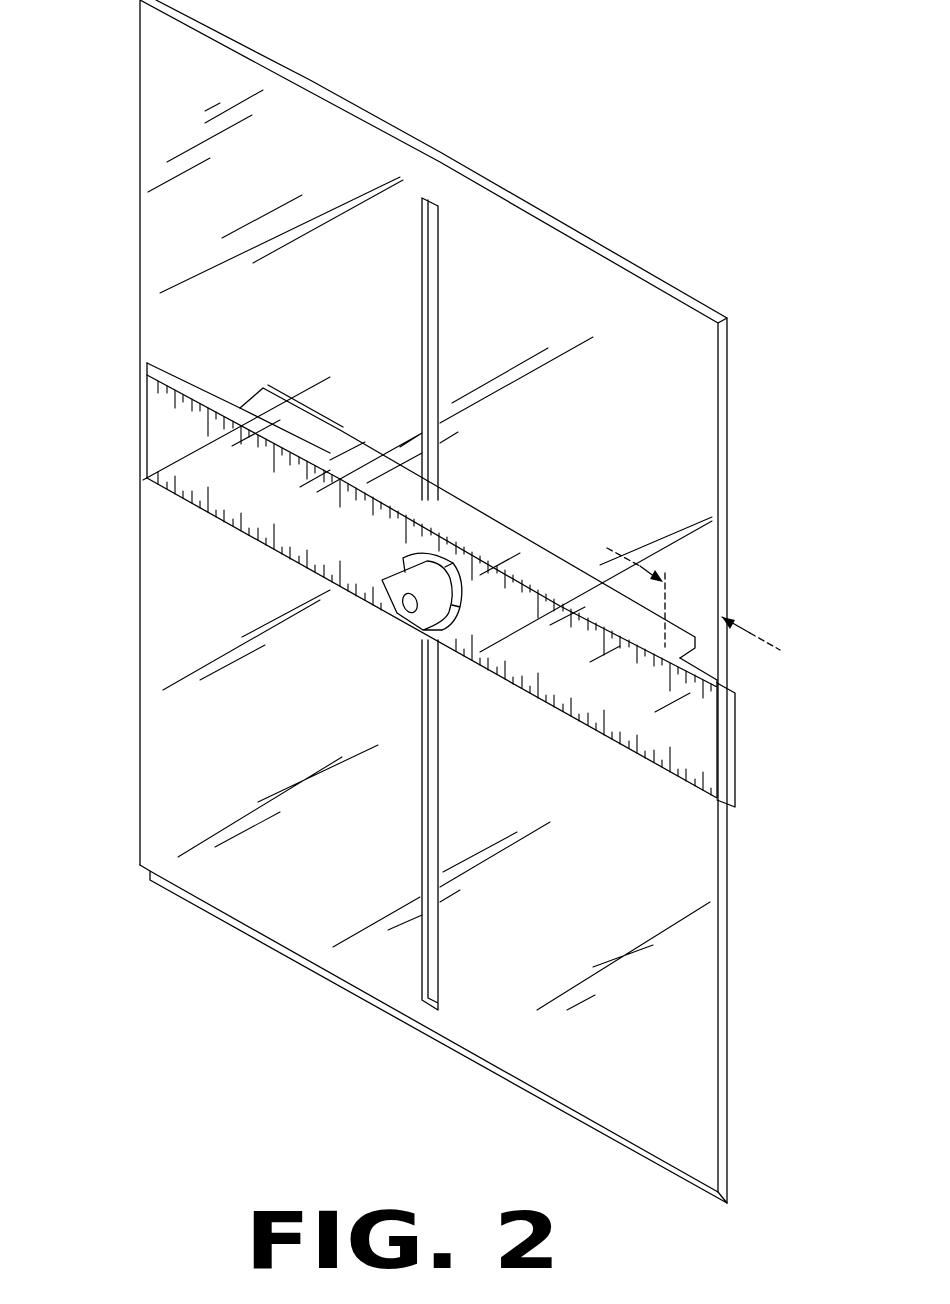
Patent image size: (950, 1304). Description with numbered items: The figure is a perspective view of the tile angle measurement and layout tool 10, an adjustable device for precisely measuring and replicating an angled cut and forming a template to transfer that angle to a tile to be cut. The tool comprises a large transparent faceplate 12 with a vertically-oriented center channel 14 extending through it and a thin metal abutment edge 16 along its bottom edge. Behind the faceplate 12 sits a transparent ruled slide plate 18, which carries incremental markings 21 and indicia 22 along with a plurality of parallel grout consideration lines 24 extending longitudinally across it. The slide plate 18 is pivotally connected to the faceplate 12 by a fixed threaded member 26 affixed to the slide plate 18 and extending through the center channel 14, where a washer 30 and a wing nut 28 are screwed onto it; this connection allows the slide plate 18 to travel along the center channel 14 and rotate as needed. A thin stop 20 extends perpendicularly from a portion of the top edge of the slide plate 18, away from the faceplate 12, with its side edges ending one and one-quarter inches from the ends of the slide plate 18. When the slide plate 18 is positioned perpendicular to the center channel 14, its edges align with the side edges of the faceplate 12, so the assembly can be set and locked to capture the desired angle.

The tile angle measurement and layout tool 10 is at (724, 190).
The transparent faceplate 12 is at (730, 1000).
The center channel 14 is at (422, 1000).
The metal abutment edge 16 is at (727, 1202).
The transparent ruled slide plate 18 is at (312, 458).
The stop 20 is at (548, 568).
The incremental markings 21 is at (610, 727).
The indicia 22 is at (673, 725).
The grout consideration lines 24 is at (168, 462).
The fixed threaded member 26 is at (408, 607).
The wing nut 28 is at (392, 585).
The washer 30 is at (405, 562).